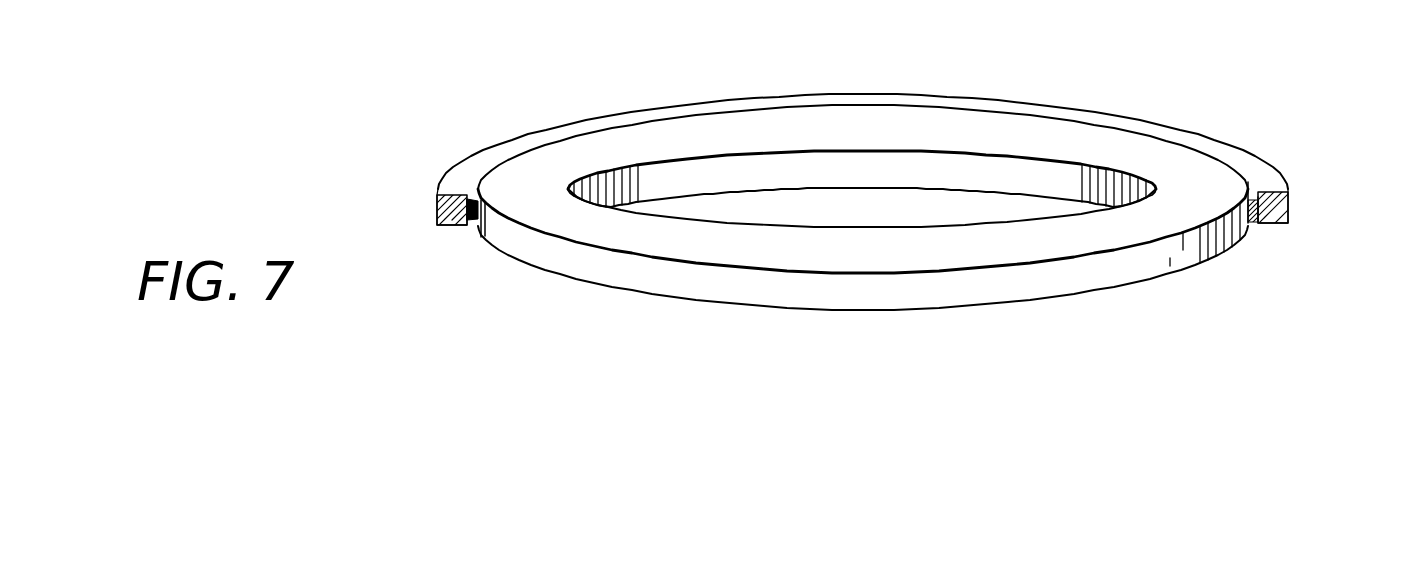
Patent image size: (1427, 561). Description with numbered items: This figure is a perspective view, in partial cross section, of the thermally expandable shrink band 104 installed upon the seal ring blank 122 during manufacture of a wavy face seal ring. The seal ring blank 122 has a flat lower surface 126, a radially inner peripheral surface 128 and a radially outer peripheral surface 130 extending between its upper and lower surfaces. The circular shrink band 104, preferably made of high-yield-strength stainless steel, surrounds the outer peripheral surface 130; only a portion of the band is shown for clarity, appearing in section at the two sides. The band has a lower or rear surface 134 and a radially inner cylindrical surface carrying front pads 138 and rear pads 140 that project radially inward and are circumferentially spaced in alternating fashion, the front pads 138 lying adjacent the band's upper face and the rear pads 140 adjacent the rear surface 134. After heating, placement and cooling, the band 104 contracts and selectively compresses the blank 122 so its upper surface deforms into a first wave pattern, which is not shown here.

The shrink band 104 is at (752, 97).
The seal ring blank 122 is at (1143, 163).
The flat lower surface 126 is at (916, 188).
The radially inner peripheral surface 128 is at (852, 163).
The radially outer peripheral surface 130 is at (711, 290).
The rear surface 134 is at (452, 226).
The front pads 138 is at (466, 192).
The rear pads 140 is at (1252, 225).